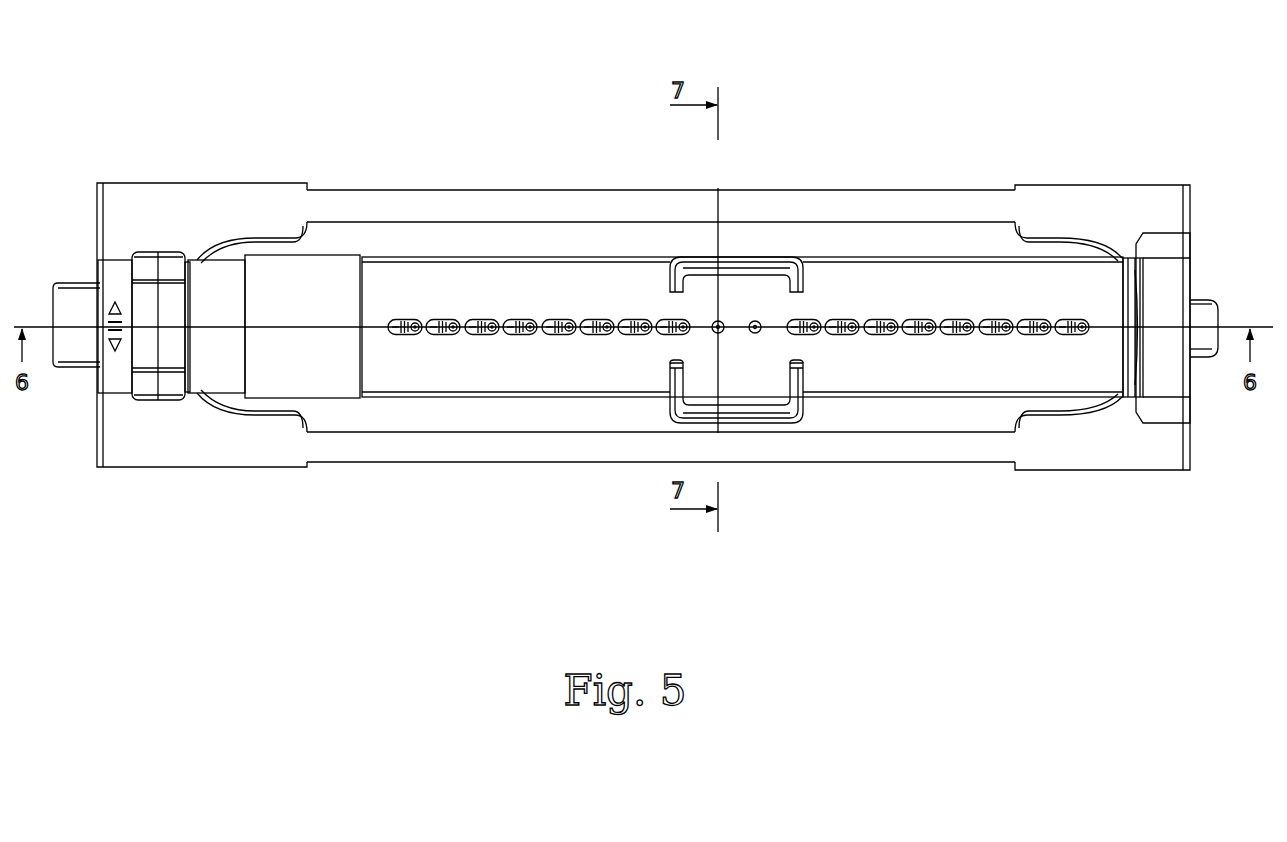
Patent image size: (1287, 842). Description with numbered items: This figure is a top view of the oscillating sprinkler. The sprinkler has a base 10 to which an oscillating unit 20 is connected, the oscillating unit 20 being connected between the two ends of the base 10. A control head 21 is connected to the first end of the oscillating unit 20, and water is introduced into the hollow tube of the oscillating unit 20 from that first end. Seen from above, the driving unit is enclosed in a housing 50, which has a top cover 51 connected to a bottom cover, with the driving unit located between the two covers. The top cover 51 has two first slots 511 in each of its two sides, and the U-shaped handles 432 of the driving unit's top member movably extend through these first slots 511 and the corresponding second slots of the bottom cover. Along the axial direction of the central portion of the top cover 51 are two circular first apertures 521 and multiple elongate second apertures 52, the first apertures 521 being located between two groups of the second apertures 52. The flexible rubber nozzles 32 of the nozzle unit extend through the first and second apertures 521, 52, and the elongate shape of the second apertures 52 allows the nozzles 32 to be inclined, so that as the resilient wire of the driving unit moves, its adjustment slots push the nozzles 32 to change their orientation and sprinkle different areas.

The base 10 is at (194, 490).
The oscillating unit 20 is at (345, 236).
The control head 21 is at (217, 282).
The flexible nozzles 32 is at (940, 318).
The housing 50 is at (607, 234).
The top cover 51 is at (945, 372).
The elongate second apertures 52 is at (548, 317).
The first slots 511 is at (680, 262).
The circular first apertures 521 is at (755, 320).
The handles 432 is at (768, 425).